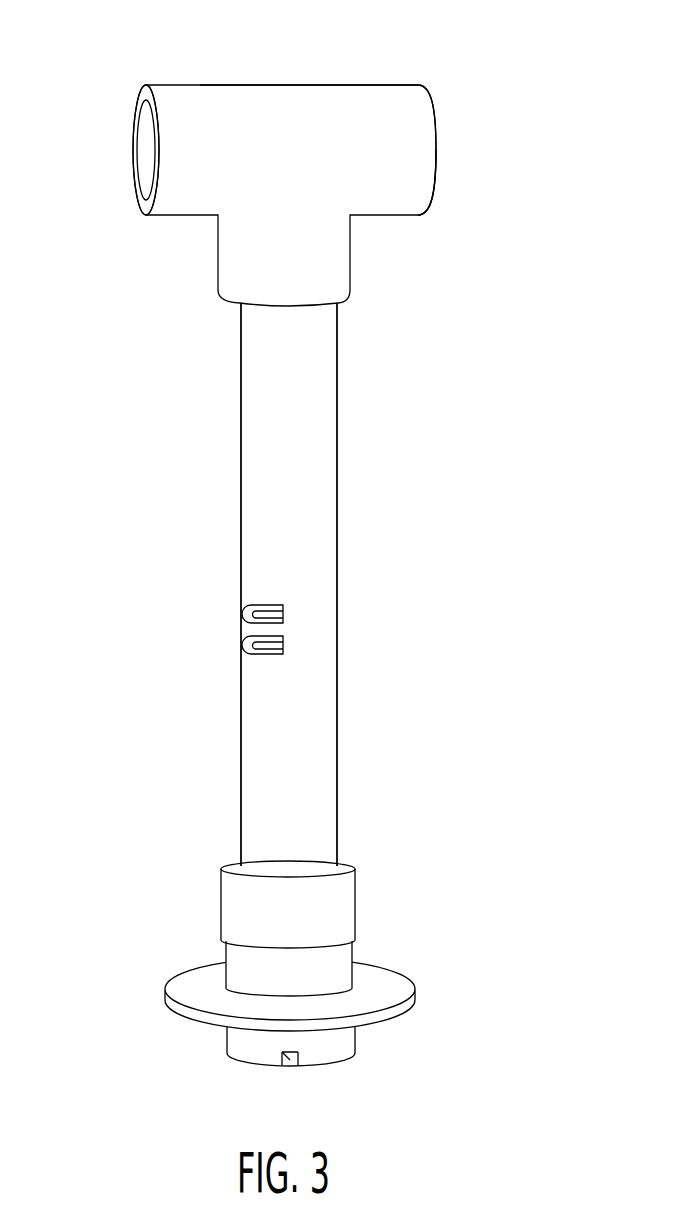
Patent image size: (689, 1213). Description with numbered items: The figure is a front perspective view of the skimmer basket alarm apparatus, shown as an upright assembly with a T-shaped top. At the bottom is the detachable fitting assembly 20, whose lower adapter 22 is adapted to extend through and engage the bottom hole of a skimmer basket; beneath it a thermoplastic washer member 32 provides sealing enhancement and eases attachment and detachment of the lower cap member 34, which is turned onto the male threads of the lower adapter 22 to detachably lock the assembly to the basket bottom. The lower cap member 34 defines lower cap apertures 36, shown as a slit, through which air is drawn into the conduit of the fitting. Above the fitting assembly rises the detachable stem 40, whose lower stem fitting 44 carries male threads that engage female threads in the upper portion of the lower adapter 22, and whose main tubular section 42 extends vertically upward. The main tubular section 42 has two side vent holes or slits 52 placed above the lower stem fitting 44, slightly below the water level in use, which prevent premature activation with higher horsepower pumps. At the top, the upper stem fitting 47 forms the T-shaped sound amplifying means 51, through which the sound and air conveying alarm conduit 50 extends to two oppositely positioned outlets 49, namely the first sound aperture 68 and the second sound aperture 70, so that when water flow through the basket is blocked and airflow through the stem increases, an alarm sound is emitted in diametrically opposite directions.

The detachable fitting assembly 20 is at (318, 981).
The lower adapter 22 is at (302, 987).
The washer member 32 is at (392, 1002).
The lower cap member 34 is at (235, 1043).
The lower cap apertures 36 is at (290, 1063).
The detachable stem 40 is at (302, 733).
The main tubular section 42 is at (325, 482).
The lower stem fitting 44 is at (302, 926).
The upper stem fitting 47 is at (300, 177).
The outlets 49 is at (143, 157).
The alarm conduit 50 is at (142, 133).
The sound amplifying means 51 is at (377, 102).
The side vent holes or slits 52 is at (242, 636).
The first sound aperture 68 is at (145, 182).
The second sound aperture 70 is at (432, 195).